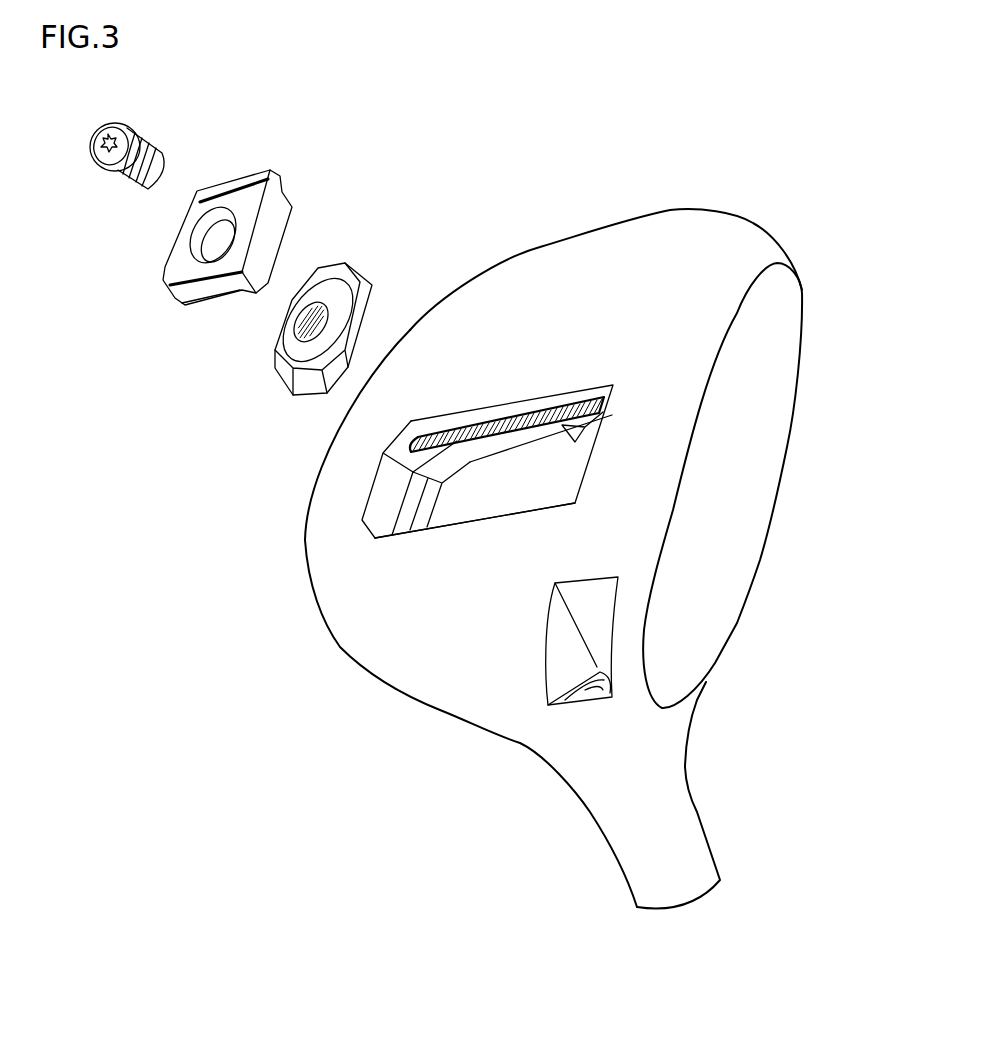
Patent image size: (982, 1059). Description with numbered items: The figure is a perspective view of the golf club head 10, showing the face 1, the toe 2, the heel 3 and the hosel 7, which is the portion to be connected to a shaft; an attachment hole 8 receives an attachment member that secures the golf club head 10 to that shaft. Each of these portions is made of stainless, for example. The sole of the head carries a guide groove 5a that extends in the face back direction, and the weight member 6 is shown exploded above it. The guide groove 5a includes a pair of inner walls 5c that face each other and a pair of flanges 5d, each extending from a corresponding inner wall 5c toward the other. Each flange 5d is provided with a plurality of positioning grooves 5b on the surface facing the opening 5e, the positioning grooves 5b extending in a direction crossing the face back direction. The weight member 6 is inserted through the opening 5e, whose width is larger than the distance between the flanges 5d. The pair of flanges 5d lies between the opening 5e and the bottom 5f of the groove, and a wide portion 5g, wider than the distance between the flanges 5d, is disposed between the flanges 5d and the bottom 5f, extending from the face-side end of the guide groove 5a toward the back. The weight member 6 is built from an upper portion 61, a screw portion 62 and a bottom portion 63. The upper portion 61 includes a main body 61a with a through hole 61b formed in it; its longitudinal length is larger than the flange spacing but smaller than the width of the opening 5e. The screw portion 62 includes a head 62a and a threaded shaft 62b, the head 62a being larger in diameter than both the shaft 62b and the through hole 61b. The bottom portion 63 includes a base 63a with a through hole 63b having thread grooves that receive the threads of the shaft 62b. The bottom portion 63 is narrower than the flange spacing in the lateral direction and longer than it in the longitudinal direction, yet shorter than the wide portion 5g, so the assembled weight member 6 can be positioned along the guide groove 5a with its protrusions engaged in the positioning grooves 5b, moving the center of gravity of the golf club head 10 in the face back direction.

The golf club head 10 is at (767, 201).
The face 1 is at (743, 496).
The toe 2 is at (793, 260).
The heel 3 is at (663, 714).
The hosel 7 is at (672, 848).
The attachment hole 8 is at (573, 703).
The guide groove 5a is at (432, 421).
The positioning grooves 5b is at (450, 432).
The inner walls 5c is at (497, 413).
The flanges 5d is at (510, 415).
The opening 5e is at (563, 465).
The bottom 5f is at (560, 420).
The wide portion 5g is at (607, 418).
The weight member 6 is at (74, 193).
The upper portion 61 is at (183, 216).
The main body 61a is at (252, 180).
The through hole 61b is at (221, 240).
The screw portion 62 is at (130, 148).
The head 62a is at (117, 131).
The shaft 62b is at (156, 163).
The bottom portion 63 is at (226, 305).
The base 63a is at (348, 273).
The through hole 63b is at (302, 313).